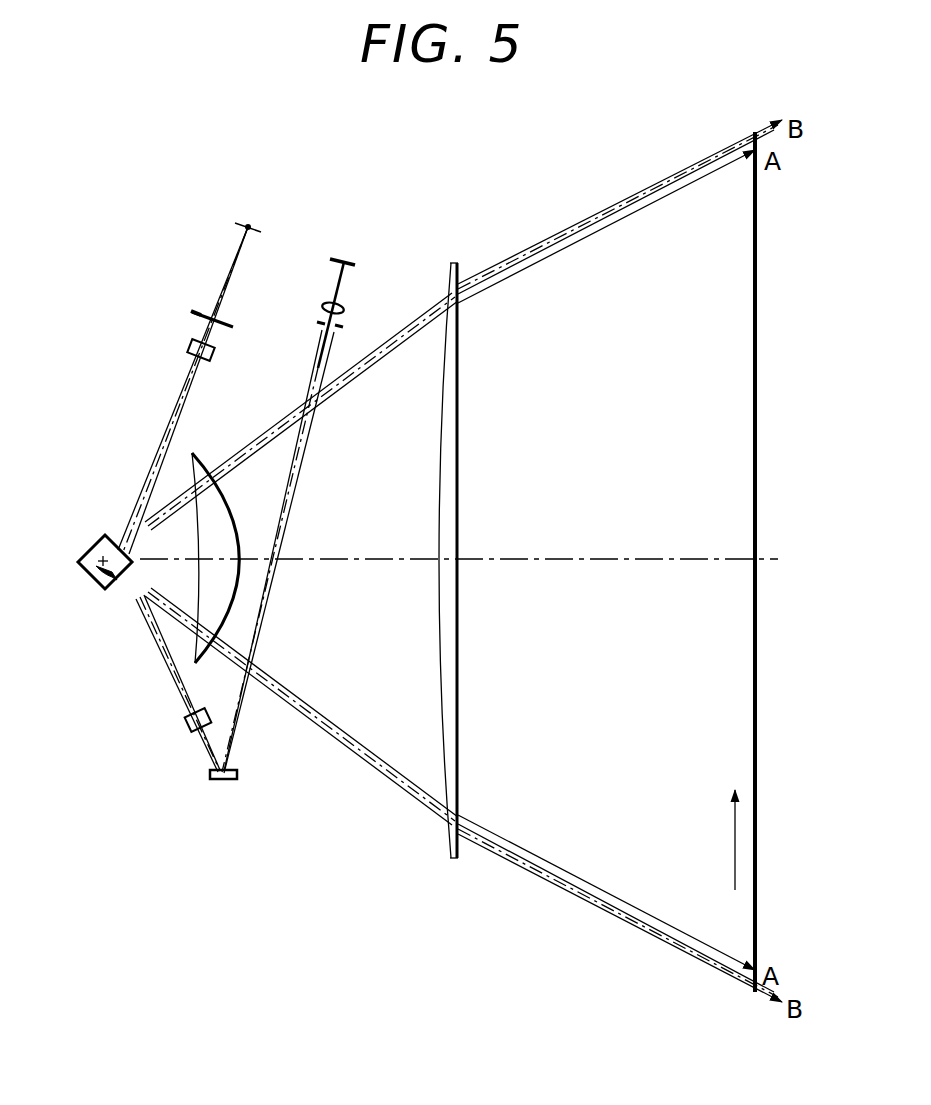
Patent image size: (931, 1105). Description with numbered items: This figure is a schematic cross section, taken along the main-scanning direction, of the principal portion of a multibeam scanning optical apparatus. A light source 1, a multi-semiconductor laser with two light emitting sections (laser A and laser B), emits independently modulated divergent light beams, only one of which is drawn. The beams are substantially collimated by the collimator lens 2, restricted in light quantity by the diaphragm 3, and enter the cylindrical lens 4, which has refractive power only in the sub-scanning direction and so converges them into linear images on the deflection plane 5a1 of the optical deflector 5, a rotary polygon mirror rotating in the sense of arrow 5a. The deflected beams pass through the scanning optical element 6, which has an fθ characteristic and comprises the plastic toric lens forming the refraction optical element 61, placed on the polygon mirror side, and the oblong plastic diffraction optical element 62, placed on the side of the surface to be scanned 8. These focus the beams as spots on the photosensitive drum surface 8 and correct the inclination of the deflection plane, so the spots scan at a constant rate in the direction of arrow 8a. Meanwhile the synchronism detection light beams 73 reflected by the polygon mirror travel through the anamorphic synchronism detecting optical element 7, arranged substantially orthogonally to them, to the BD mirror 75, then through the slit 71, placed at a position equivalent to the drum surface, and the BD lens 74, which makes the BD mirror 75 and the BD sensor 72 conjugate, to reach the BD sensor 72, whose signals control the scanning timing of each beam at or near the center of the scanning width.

The light source 1 is at (246, 226).
The collimator lens 2 is at (207, 315).
The diaphragm 3 is at (194, 316).
The cylindrical lens 4 is at (190, 351).
The optical deflector 5 is at (92, 549).
The arrow indicating rotation direction 5a is at (93, 580).
The deflection plane 5a1 is at (107, 536).
The scanning optical element 6 is at (341, 537).
The refraction optical element 61 is at (198, 452).
The diffraction optical element 62 is at (456, 262).
The synchronism detecting optical element 7 is at (190, 728).
The slit 71 is at (322, 330).
The BD sensor 72 is at (350, 261).
The synchronism detection light beams 73 is at (165, 653).
The BD lens 74 is at (346, 307).
The BD mirror 75 is at (221, 780).
The surface to be scanned 8 is at (758, 346).
The arrow indicating main-scanning direction 8a is at (733, 845).